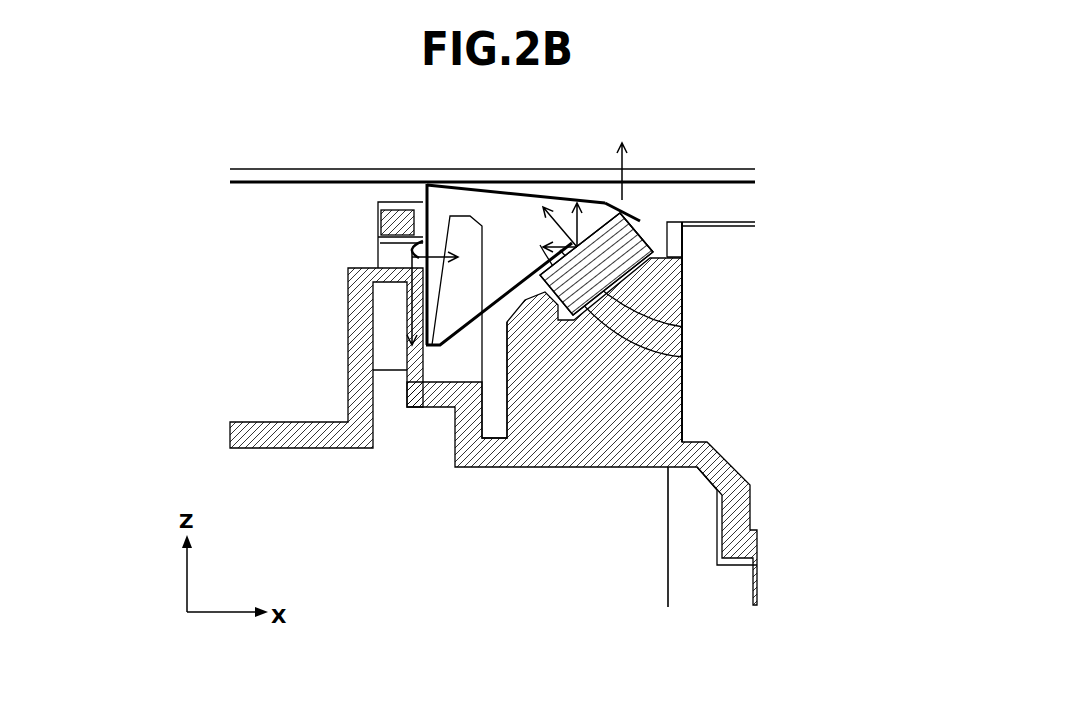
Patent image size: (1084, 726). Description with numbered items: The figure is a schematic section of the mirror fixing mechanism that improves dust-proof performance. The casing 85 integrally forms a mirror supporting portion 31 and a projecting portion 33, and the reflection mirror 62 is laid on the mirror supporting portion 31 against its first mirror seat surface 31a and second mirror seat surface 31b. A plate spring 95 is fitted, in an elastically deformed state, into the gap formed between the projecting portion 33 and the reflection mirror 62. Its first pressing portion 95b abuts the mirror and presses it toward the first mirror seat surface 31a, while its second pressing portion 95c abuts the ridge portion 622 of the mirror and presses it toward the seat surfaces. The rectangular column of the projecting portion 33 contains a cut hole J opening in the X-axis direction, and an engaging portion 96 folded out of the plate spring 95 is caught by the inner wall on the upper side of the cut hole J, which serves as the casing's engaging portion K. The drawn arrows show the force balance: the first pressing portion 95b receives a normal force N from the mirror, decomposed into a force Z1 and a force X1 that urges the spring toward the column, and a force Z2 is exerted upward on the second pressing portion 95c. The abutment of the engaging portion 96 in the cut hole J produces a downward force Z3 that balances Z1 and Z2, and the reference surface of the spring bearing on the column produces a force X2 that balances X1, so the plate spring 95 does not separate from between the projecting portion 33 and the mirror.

The mirror supporting portion 31 is at (587, 467).
The first mirror seat surface 31a is at (683, 327).
The second mirror seat surface 31b is at (546, 292).
The projecting portion 33 is at (348, 352).
The reflection mirror 62 is at (656, 246).
The ridge portion 622 is at (620, 210).
The casing 85 is at (683, 300).
The plate spring 95 is at (527, 195).
The first pressing portion 95b is at (580, 213).
The second pressing portion 95c is at (625, 213).
The engaging portion 96 is at (407, 243).
The cut hole J is at (387, 262).
The engaging portion K is at (415, 230).
The normal force N is at (570, 217).
The force X1 is at (683, 357).
The force X2 is at (452, 255).
The force Z1 is at (606, 210).
The force Z2 is at (624, 196).
The force Z3 is at (408, 258).